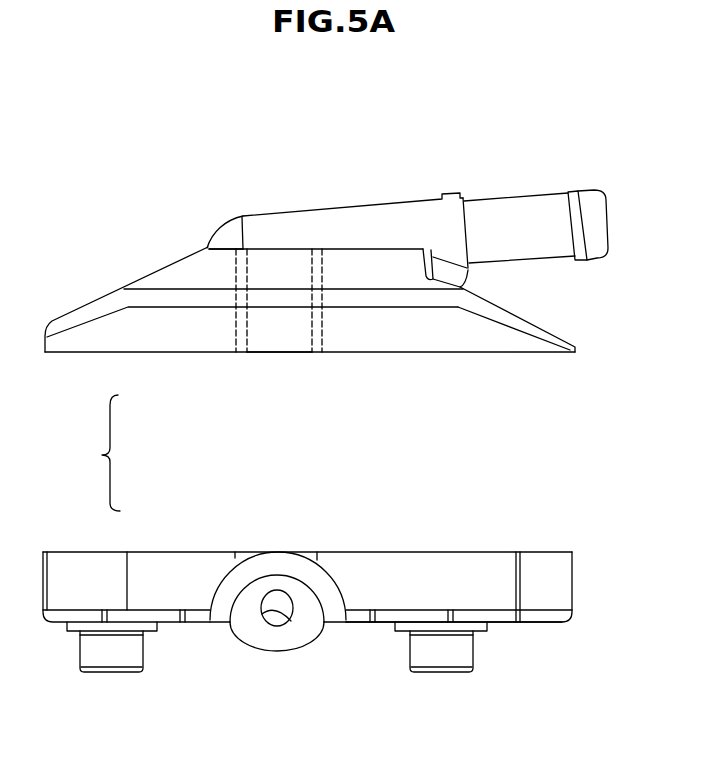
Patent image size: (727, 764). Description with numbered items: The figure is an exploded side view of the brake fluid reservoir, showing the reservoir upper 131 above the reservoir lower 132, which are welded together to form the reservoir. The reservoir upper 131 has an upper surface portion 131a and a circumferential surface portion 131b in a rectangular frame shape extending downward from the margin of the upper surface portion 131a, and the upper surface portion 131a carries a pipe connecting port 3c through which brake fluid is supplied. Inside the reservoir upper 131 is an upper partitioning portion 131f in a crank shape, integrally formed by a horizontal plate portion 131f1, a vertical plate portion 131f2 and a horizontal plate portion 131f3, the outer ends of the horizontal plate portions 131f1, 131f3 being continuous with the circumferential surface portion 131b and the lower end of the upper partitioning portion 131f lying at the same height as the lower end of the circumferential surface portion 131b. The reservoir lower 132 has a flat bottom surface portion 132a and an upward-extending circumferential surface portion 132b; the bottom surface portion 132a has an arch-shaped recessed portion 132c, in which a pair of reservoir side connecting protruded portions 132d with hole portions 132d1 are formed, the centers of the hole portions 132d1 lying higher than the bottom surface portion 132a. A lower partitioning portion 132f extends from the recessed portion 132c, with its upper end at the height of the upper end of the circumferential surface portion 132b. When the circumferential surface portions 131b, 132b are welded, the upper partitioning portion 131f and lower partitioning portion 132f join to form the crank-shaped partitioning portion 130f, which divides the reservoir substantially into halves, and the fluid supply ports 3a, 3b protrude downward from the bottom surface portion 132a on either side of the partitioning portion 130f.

The reservoir upper 131 is at (620, 140).
The pipe connecting port 3c is at (397, 220).
The upper surface portion 131a is at (483, 308).
The circumferential surface portion 131b is at (475, 335).
The upper partitioning portion 131f is at (233, 325).
The horizontal plate portion 131f1 is at (236, 217).
The vertical plate portion 131f2 is at (278, 328).
The horizontal plate portion 131f3 is at (322, 249).
The partitioning portion 130f is at (79, 453).
The reservoir lower 132 is at (567, 487).
The bottom surface portion 132a is at (545, 623).
The circumferential surface portion 132b is at (572, 580).
The recessed portion 132c is at (332, 602).
The reservoir side connecting protruded portion 132d is at (295, 635).
The hole portion 132d1 is at (262, 614).
The lower partitioning portion 132f is at (226, 558).
The fluid supply port 3a is at (112, 673).
The fluid supply port 3b is at (440, 673).